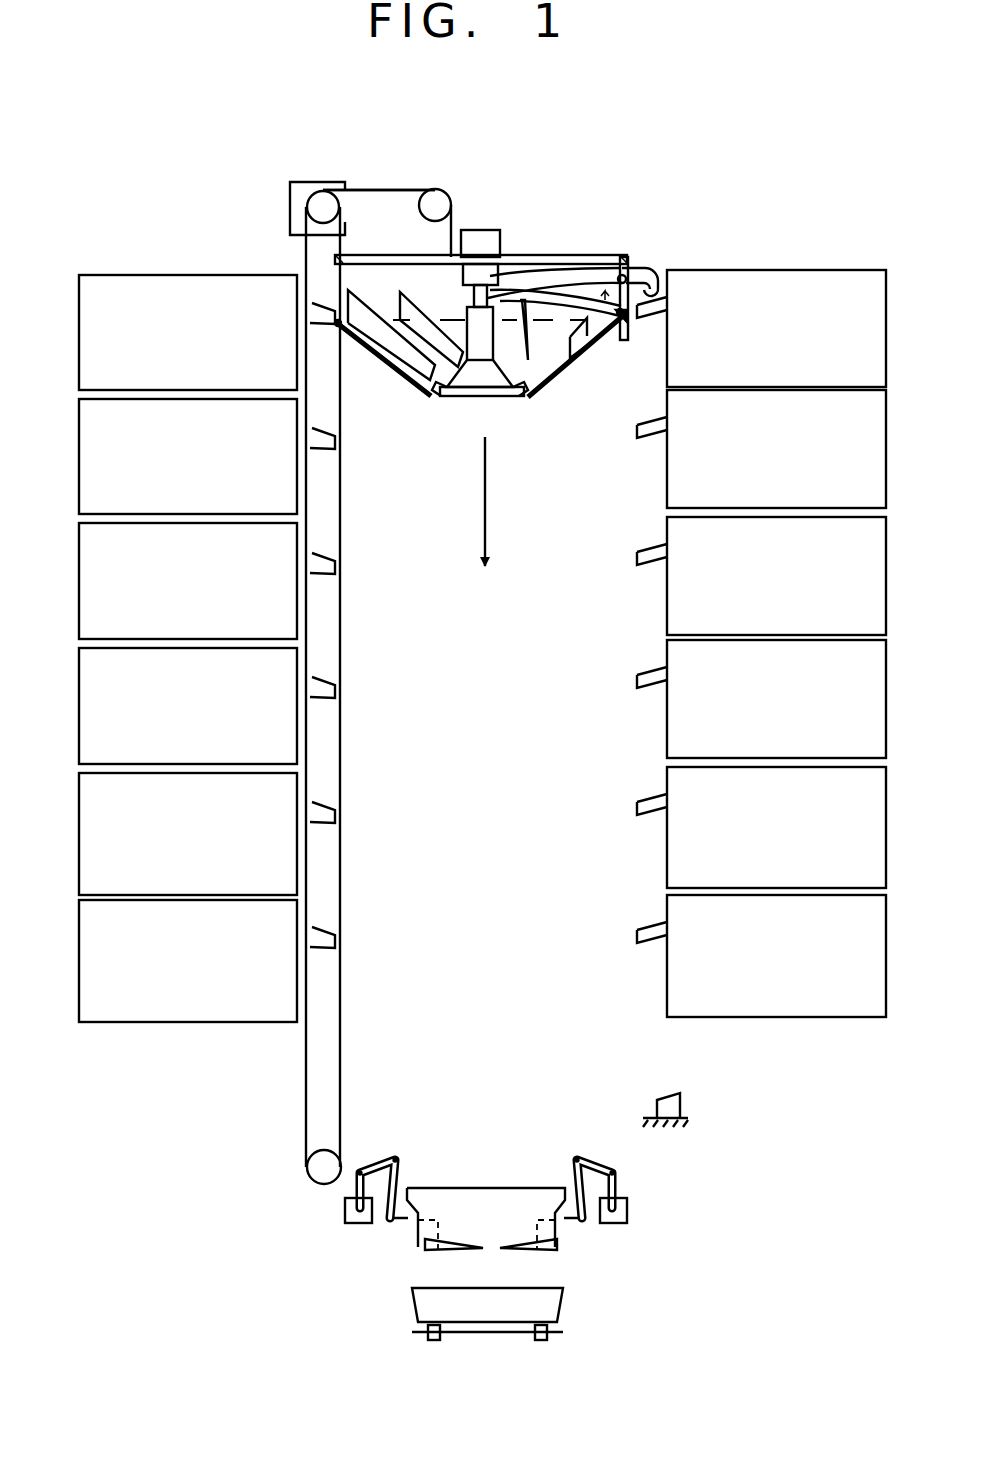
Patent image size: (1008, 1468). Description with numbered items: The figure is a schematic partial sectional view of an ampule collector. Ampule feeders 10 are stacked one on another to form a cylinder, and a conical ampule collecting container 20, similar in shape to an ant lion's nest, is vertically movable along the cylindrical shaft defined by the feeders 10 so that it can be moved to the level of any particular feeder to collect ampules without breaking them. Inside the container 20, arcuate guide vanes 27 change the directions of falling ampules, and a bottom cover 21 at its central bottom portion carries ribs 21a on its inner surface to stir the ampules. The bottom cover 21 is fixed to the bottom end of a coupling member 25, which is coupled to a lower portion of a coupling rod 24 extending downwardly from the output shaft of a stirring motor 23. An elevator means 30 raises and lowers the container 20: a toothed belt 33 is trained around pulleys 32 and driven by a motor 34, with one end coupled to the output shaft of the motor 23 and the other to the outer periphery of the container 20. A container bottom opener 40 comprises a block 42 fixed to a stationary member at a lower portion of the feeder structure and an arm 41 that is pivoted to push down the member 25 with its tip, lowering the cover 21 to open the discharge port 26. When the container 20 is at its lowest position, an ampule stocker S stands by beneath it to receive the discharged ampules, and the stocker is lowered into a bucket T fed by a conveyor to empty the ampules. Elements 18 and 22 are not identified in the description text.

The ampule feeder 10 is at (790, 984).
The discharge tab 18 is at (313, 322).
The ampule collecting container 20 is at (566, 392).
The bottom cover 21 is at (495, 398).
The rib 21a is at (437, 397).
The support bar 22 is at (533, 254).
The motor 23 is at (482, 236).
The coupling rod 24 is at (583, 268).
The coupling member 25 is at (482, 348).
The discharge port 26 is at (527, 400).
The arcuate guide vane 27 is at (440, 338).
The elevator means 30 is at (383, 178).
The pulley 32 is at (316, 204).
The toothed belt 33 is at (410, 188).
The motor 34 is at (318, 182).
The container bottom opener 40 is at (598, 278).
The arm 41 is at (607, 288).
The block 42 is at (680, 1103).
The ampule stocker S is at (498, 1187).
The bucket T is at (563, 1294).